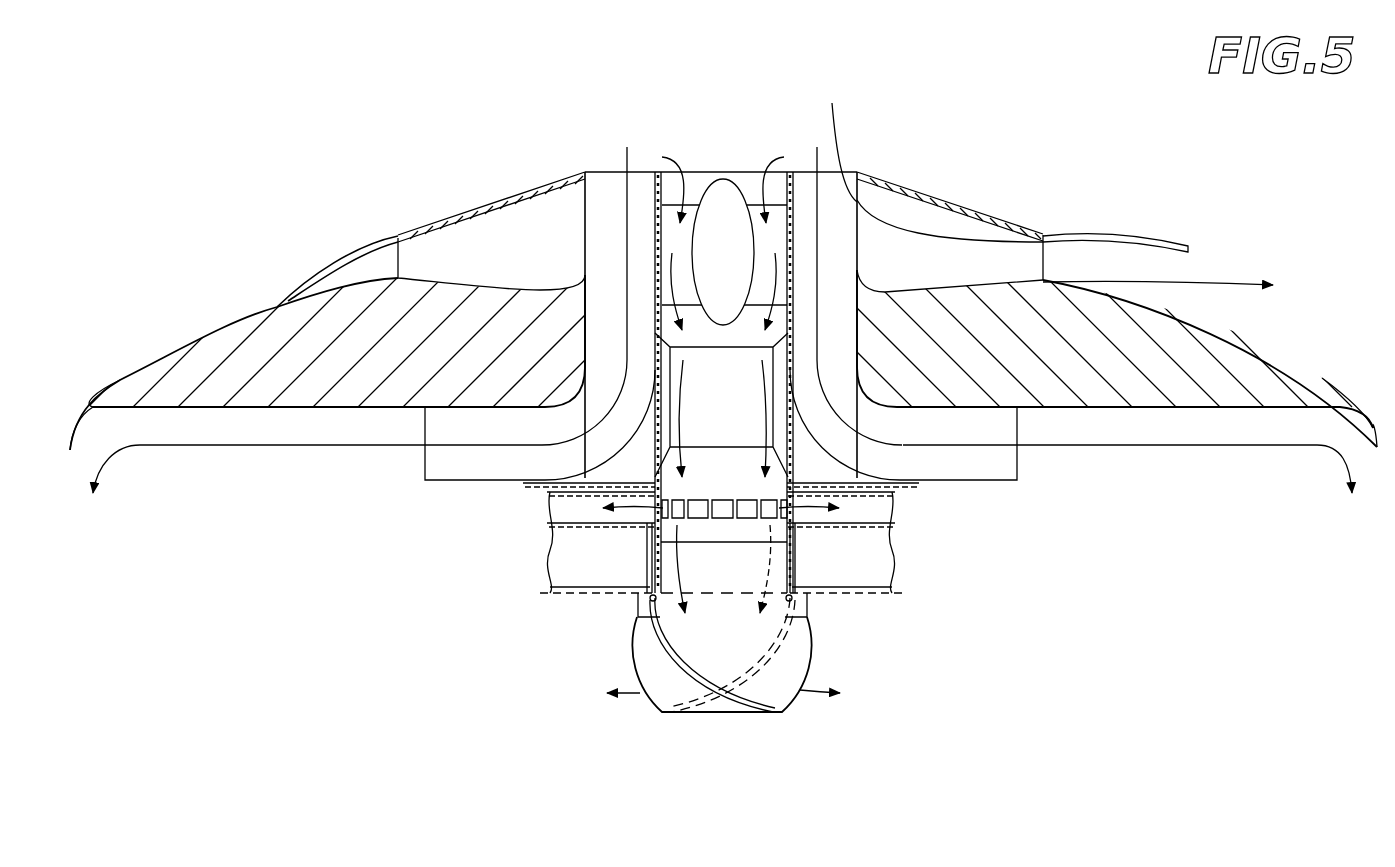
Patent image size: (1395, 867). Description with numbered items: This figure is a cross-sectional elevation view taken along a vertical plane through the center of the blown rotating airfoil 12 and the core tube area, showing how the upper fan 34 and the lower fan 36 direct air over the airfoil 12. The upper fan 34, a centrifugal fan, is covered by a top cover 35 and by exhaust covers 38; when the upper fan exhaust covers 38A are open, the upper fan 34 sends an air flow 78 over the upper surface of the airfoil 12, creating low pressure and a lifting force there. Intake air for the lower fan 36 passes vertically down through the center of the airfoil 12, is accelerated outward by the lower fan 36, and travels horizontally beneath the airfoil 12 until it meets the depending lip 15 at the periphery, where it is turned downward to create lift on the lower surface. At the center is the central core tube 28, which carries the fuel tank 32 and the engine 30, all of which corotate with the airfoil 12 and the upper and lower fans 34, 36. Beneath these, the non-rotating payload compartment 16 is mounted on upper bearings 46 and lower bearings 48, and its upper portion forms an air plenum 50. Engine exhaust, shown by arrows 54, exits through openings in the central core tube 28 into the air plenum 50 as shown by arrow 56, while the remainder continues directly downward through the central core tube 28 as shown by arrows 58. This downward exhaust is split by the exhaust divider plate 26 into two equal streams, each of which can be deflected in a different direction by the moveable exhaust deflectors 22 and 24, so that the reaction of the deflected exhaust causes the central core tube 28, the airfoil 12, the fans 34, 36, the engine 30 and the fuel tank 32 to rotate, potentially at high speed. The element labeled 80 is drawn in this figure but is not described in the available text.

The airfoil 12 is at (1235, 333).
The depending lip 15 is at (92, 413).
The non-rotating payload compartment 16 is at (573, 592).
The moveable exhaust deflector 22 is at (670, 650).
The moveable exhaust deflector 24 is at (790, 652).
The exhaust divider plate 26 is at (787, 708).
The central core tube 28 is at (793, 208).
The engine 30 is at (790, 343).
The fuel tank 32 is at (721, 178).
The upper fan 34 is at (480, 225).
The top cover 35 is at (547, 182).
The lower fan 36 is at (455, 482).
The exhaust cover 38 is at (343, 258).
The upper fan exhaust cover 38A is at (1150, 235).
The upper bearing 46 is at (647, 490).
The lower bearing 48 is at (640, 605).
The air plenum 50 is at (557, 500).
The arrows 54 is at (754, 430).
The arrow 56 is at (637, 523).
The arrows 58 is at (758, 572).
The air flow 78 is at (1237, 282).
The lower plate 80 is at (238, 445).